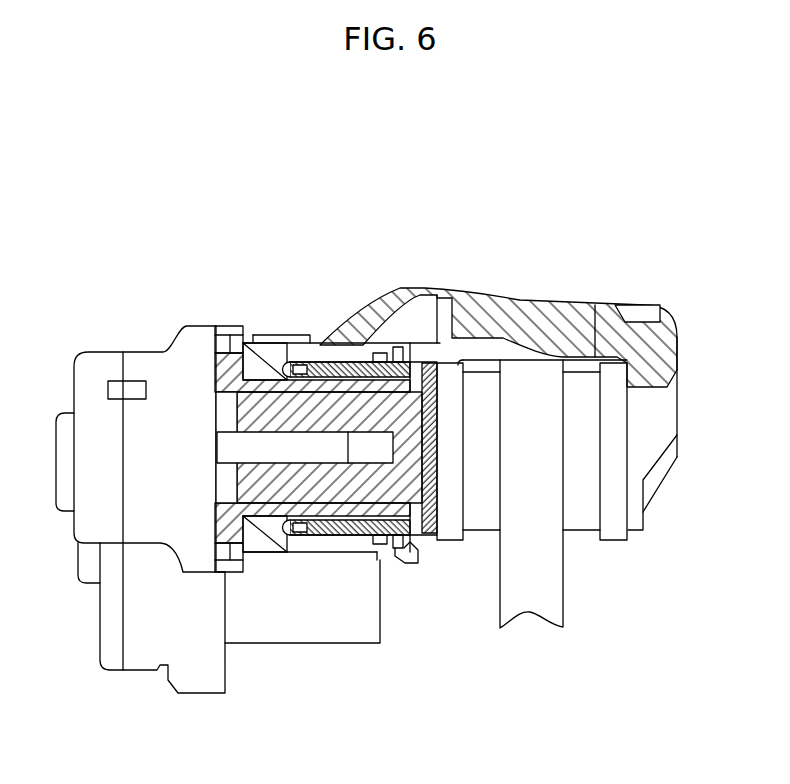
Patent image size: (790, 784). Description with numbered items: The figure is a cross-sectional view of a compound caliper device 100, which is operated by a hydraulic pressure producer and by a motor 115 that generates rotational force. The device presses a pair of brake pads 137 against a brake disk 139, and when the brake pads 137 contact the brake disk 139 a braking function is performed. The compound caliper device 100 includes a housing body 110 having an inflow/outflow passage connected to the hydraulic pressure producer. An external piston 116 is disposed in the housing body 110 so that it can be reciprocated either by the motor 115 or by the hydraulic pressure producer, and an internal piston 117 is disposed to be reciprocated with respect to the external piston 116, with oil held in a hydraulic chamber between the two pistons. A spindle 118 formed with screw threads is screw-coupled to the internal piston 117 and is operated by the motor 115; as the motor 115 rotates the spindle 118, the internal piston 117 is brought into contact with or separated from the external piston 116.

The compound caliper device 100 is at (321, 259).
The housing body 110 is at (413, 292).
The motor 115 is at (320, 605).
The external piston 116 is at (348, 352).
The internal piston 117 is at (302, 410).
The spindle 118 is at (261, 450).
The brake pads 137 is at (594, 390).
The brake disk 139 is at (550, 588).